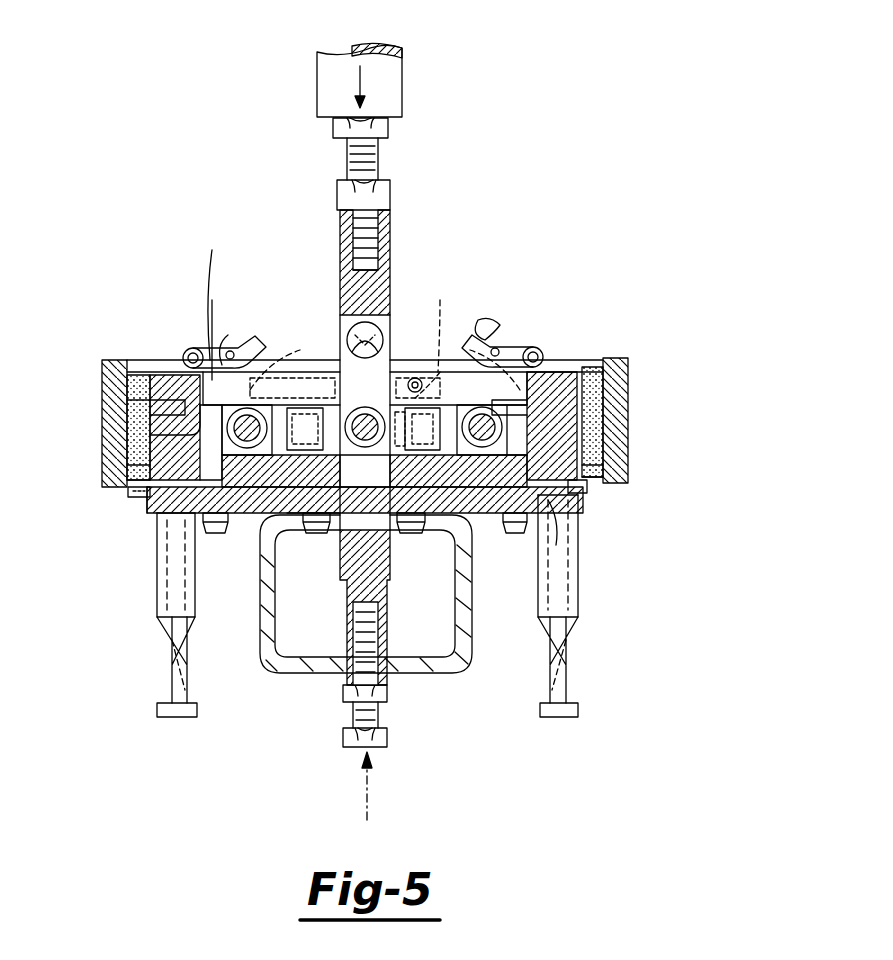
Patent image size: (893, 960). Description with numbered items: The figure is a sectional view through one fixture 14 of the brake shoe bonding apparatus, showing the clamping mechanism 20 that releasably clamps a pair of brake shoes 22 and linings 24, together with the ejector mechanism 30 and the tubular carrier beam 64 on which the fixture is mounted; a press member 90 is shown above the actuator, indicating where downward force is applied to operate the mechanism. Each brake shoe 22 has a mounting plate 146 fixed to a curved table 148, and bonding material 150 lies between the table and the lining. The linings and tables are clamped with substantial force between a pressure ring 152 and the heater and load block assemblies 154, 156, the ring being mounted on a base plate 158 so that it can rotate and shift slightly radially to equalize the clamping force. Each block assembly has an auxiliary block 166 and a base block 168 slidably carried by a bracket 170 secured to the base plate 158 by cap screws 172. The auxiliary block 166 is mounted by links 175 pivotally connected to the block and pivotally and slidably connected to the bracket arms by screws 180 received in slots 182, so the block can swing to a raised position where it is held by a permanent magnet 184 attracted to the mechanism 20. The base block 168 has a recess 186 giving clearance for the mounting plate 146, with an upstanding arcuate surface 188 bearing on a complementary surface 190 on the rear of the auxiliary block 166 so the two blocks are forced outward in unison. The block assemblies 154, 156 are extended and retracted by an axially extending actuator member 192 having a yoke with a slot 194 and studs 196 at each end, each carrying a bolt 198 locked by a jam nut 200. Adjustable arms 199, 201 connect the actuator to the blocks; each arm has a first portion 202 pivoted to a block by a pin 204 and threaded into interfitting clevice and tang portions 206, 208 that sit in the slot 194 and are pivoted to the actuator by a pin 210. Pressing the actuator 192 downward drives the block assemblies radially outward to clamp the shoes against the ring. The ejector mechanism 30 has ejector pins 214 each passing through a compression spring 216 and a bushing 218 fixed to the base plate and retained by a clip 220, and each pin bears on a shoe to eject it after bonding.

The fixture 14 is at (147, 262).
The clamping mechanism 20 is at (332, 216).
The brake shoe 22 is at (146, 495).
The lining 24 is at (142, 358).
The ejector mechanism 30 is at (195, 590).
The tubular carrier beam 64 is at (473, 626).
The actuator ram 90 is at (398, 66).
The mounting plate 146 is at (138, 398).
The table 148 is at (125, 466).
The bonding material 150 is at (146, 480).
The pressure ring 152 is at (118, 415).
The heater and load block assembly 154 is at (162, 368).
The heater and load block assembly 156 is at (580, 368).
The base plate 158 is at (156, 524).
The auxiliary block 166 is at (172, 372).
The base block 168 is at (560, 325).
The bracket 170 is at (148, 498).
The cap screw 172 is at (320, 520).
The link 175 is at (270, 360).
The screw 180 is at (412, 376).
The slot 182 is at (428, 366).
The permanent magnet 184 is at (216, 350).
The recess 186 is at (160, 412).
The arcuate surface 188 is at (228, 348).
The surface 190 is at (655, 405).
The actuator member 192 is at (392, 232).
The slot 194 is at (390, 565).
The stud 196 is at (388, 600).
The bolt 198 is at (388, 128).
The adjustable arm 199 is at (250, 515).
The jam nut 200 is at (388, 195).
The adjustable arm 201 is at (470, 470).
The first portion 202 is at (366, 442).
The pin 204 is at (363, 426).
The clevice portion 206 is at (363, 429).
The tang portion 208 is at (365, 471).
The pin 210 is at (361, 409).
The ejector pin 214 is at (188, 665).
The compression spring 216 is at (198, 706).
The bushing 218 is at (158, 640).
The clip 220 is at (560, 522).